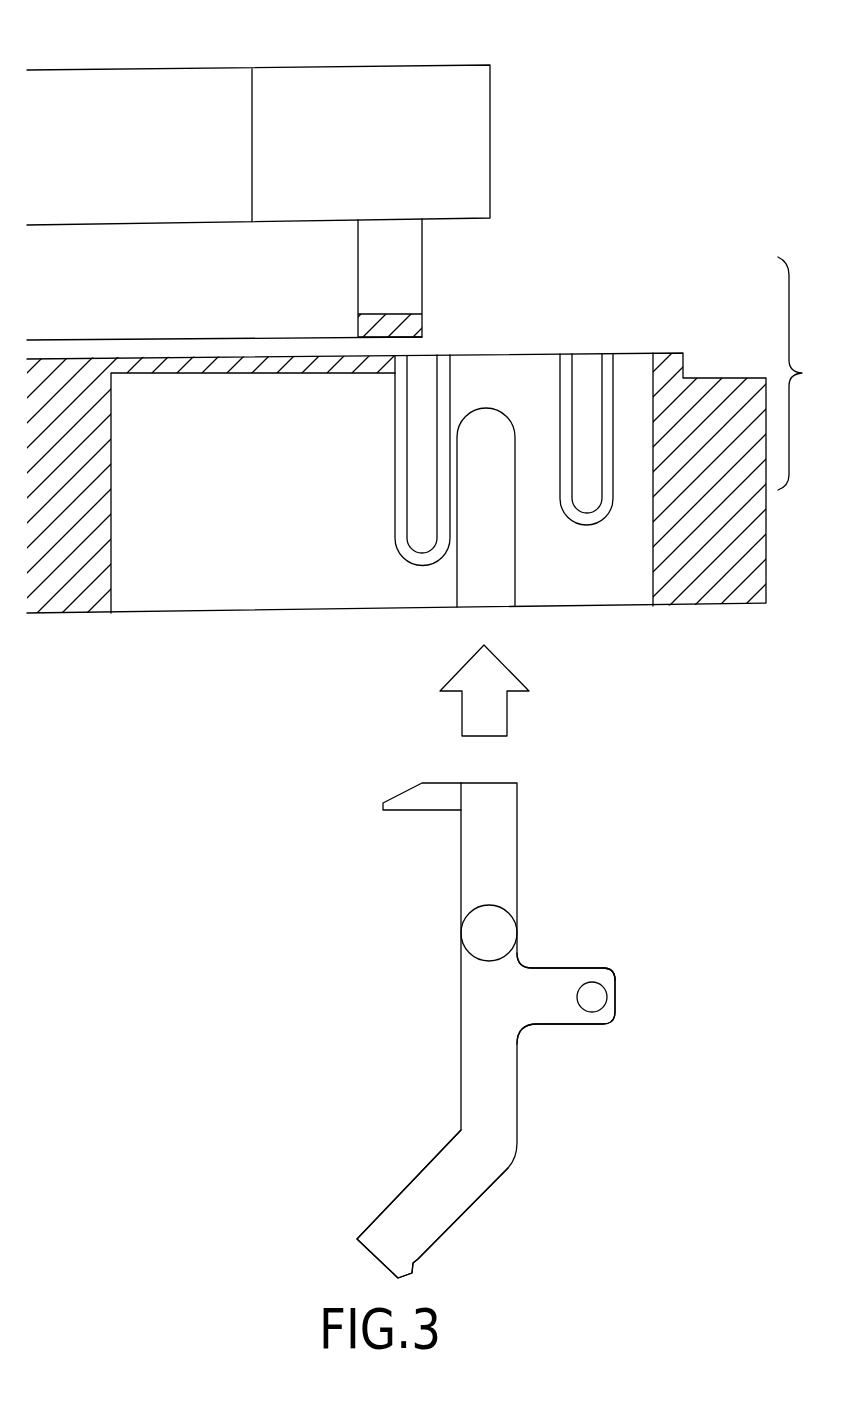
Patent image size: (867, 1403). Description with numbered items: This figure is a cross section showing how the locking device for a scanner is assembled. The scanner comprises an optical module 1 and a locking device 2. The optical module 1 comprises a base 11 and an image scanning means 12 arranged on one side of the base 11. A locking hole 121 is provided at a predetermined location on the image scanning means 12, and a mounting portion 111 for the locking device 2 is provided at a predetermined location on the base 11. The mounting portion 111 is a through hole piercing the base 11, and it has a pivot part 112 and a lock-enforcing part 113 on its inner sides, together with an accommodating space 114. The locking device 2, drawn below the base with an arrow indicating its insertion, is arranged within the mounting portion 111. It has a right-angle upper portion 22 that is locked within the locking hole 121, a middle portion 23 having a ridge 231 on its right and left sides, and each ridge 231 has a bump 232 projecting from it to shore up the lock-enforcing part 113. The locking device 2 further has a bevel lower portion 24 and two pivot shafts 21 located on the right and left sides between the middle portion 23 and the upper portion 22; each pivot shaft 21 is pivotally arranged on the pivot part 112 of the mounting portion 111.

The optical module 1 is at (799, 373).
The base 11 is at (685, 350).
The mounting portion 111 is at (520, 352).
The pivot part 112 is at (496, 548).
The lock-enforcing part 113 is at (589, 388).
The accommodating space 114 is at (218, 573).
The image scanning means 12 is at (304, 88).
The locking hole 121 is at (403, 258).
The locking device 2 is at (615, 960).
The pivot shaft 21 is at (503, 934).
The right-angle upper portion 22 is at (414, 792).
The middle portion 23 is at (493, 1003).
The ridge 231 is at (610, 975).
The bump 232 is at (597, 998).
The bevel lower portion 24 is at (443, 1200).